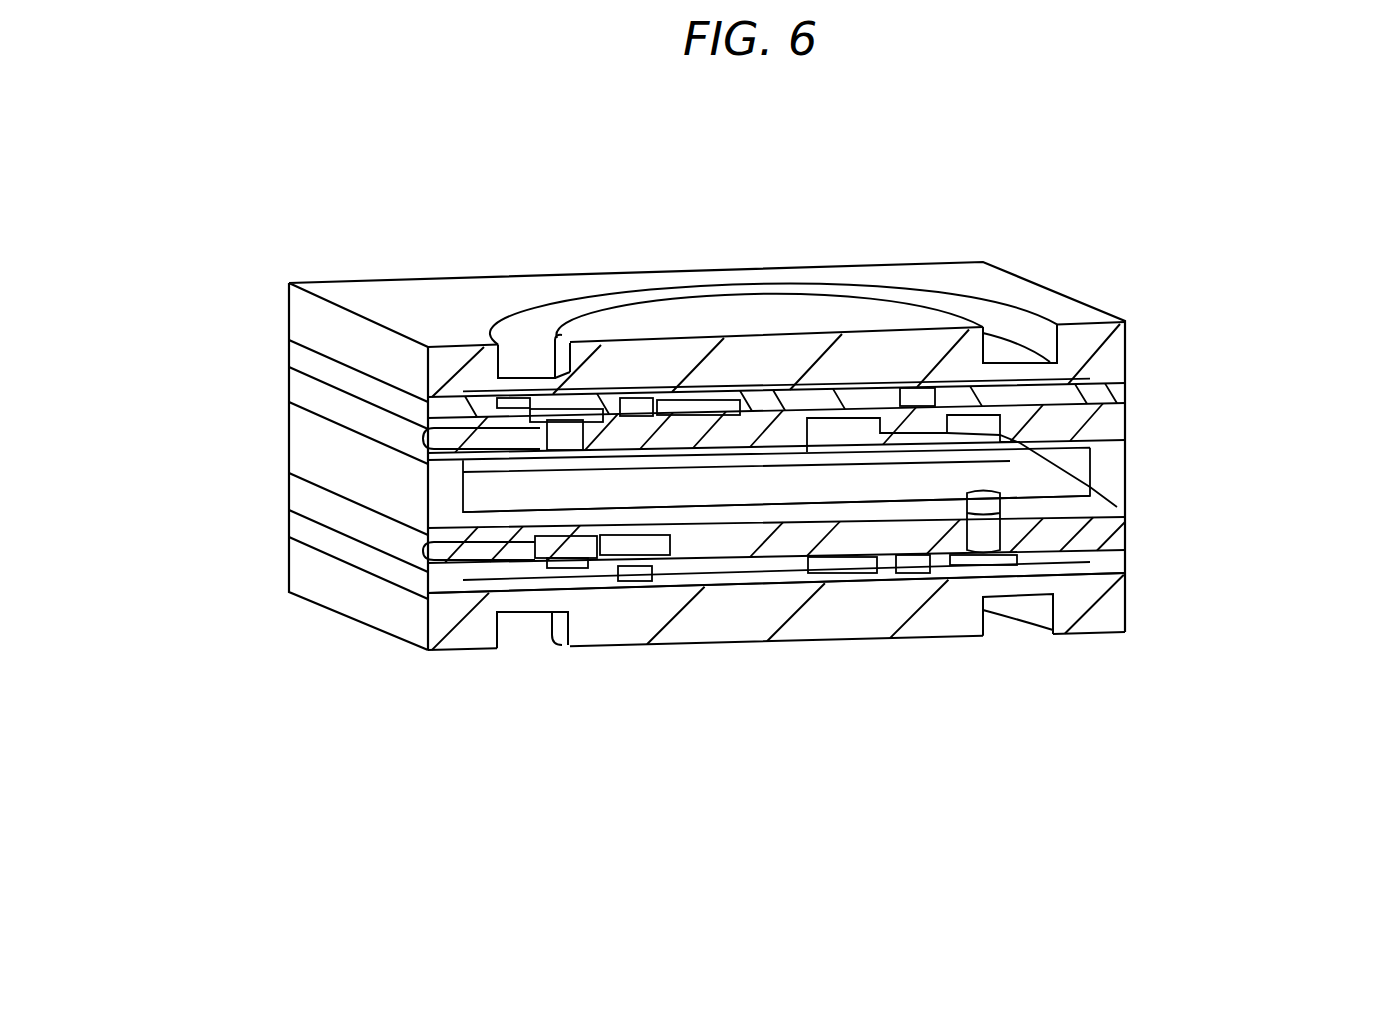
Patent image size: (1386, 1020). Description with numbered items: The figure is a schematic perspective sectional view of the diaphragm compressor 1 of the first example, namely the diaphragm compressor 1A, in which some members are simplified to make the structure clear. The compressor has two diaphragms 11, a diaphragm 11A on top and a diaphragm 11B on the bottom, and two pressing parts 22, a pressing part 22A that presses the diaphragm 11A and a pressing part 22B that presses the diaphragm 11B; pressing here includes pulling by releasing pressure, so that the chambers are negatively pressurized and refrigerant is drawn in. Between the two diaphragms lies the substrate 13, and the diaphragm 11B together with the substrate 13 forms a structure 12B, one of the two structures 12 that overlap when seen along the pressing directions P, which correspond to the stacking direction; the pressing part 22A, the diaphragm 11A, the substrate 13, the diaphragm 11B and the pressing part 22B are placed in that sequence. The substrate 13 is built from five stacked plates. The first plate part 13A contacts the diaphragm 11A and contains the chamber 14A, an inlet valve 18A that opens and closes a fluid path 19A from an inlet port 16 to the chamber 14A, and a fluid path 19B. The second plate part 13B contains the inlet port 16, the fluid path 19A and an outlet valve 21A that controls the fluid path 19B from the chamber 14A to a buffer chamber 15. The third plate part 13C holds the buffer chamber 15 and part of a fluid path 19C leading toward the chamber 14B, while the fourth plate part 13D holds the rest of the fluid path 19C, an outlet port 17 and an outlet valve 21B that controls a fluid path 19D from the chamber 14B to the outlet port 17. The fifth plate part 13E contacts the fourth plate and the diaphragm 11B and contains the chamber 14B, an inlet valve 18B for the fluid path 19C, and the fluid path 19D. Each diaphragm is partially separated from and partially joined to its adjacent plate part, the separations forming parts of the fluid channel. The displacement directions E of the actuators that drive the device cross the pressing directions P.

The diaphragm compressor 1 is at (781, 373).
The diaphragm compressor 1A is at (1155, 171).
The diaphragms 11 is at (682, 505).
The diaphragm 11A is at (640, 360).
The diaphragm 11B is at (935, 622).
The structures 12 is at (1240, 540).
The structure 12B is at (1250, 456).
The substrate 13 is at (841, 482).
The first plate part 13A is at (1118, 385).
The second plate part 13B is at (1118, 422).
The third plate part 13C is at (1112, 470).
The fourth plate part 13D is at (1112, 523).
The fifth plate part 13E is at (812, 572).
The chamber 14A is at (792, 388).
The chamber 14B is at (792, 582).
The buffer chamber 15 is at (687, 488).
The inlet port 16 is at (428, 436).
The outlet port 17 is at (423, 546).
The inlet valve 18A is at (706, 400).
The inlet valve 18B is at (867, 562).
The fluid path 19A is at (540, 433).
The fluid path 19B is at (940, 398).
The fluid path 19C is at (858, 560).
The fluid path 19D is at (640, 575).
The outlet valve 21A is at (972, 430).
The outlet valve 21B is at (535, 553).
The pressing parts 22 is at (647, 523).
The pressing part 22A is at (667, 322).
The pressing part 22B is at (657, 647).
The pressing directions P is at (195, 553).
The displacement directions E is at (766, 713).